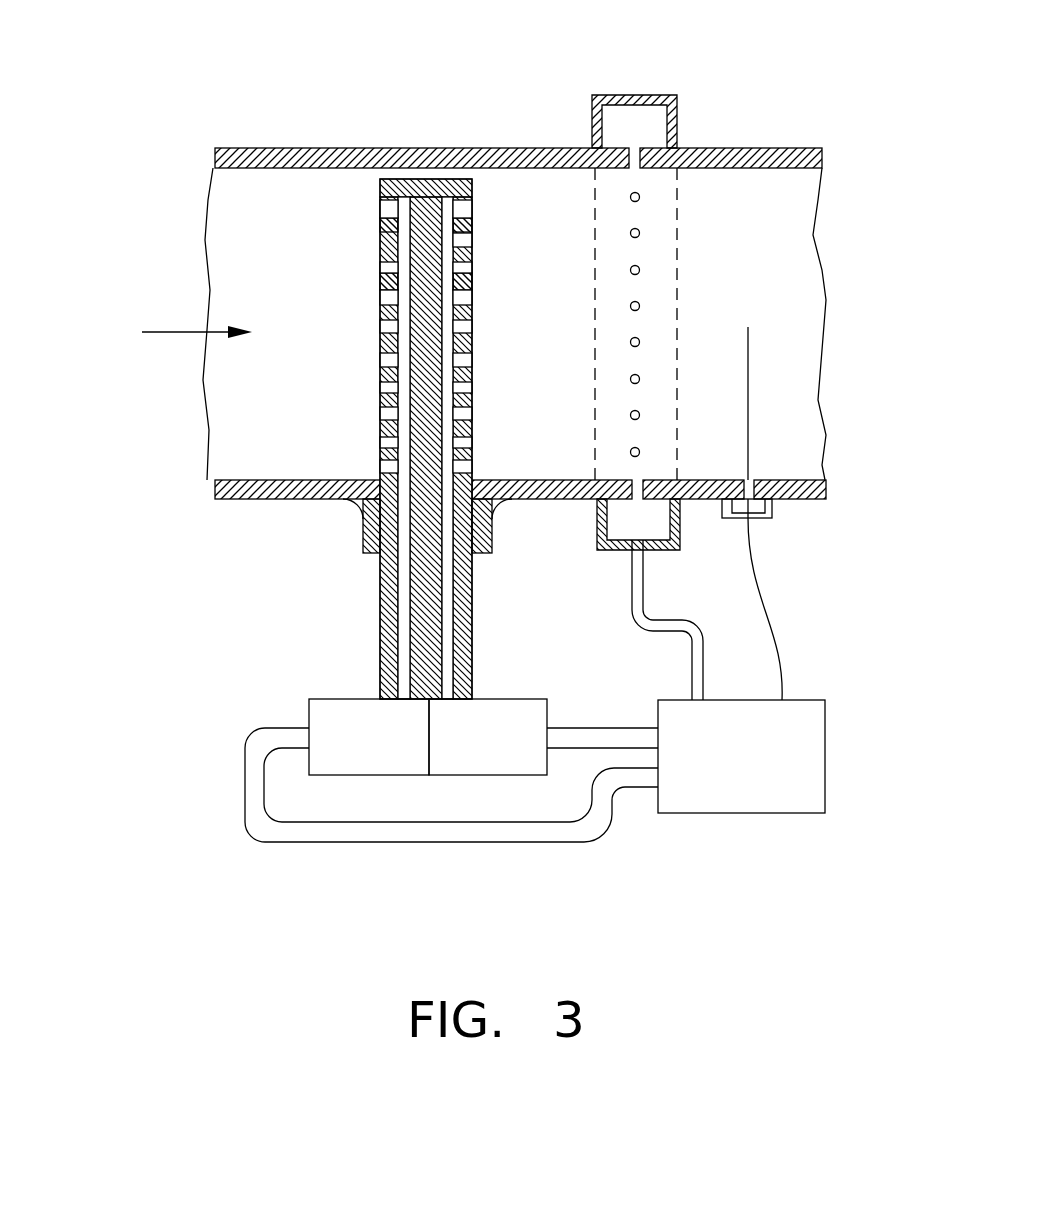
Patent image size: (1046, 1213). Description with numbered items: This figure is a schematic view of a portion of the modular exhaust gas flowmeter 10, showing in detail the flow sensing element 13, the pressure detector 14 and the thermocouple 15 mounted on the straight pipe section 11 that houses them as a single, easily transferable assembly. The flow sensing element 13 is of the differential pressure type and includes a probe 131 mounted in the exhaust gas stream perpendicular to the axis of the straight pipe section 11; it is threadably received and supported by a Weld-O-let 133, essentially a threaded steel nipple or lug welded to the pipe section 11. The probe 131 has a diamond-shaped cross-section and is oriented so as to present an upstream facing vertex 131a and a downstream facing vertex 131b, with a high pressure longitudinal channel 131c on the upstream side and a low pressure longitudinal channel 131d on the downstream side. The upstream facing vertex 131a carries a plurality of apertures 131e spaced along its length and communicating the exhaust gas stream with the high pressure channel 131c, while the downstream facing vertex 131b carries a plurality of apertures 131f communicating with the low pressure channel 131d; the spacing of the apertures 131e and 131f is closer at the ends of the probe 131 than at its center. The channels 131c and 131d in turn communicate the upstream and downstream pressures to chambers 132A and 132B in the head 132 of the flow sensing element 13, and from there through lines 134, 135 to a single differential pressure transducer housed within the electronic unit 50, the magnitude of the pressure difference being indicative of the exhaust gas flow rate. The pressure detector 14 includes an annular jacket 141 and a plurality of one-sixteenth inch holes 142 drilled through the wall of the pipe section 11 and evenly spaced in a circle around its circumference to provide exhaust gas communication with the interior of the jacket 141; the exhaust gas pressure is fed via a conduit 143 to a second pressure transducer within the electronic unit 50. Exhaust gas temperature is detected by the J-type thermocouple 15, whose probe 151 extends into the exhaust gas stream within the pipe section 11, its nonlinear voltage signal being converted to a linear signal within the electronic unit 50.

The modular exhaust gas flowmeter 10 is at (330, 112).
The straight pipe section 11 is at (268, 273).
The flow sensing element 13 is at (445, 538).
The pressure detector 14 is at (647, 357).
The thermocouple 15 is at (772, 510).
The electronic unit 50 is at (756, 770).
The probe 131 is at (431, 439).
The upstream facing vertex 131a is at (380, 283).
The downstream facing vertex 131b is at (470, 285).
The high pressure longitudinal channel 131c is at (380, 220).
The low pressure longitudinal channel 131d is at (450, 234).
The apertures 131e is at (383, 330).
The apertures 131f is at (467, 237).
The head 132 is at (447, 694).
The chamber 132A is at (398, 752).
The chamber 132B is at (518, 752).
The Weld-O-let 133 is at (495, 525).
The line 134 is at (570, 728).
The line 135 is at (497, 842).
The annular jacket 141 is at (592, 120).
The holes 142 is at (640, 195).
The conduit 143 is at (660, 618).
The probe 151 is at (750, 394).